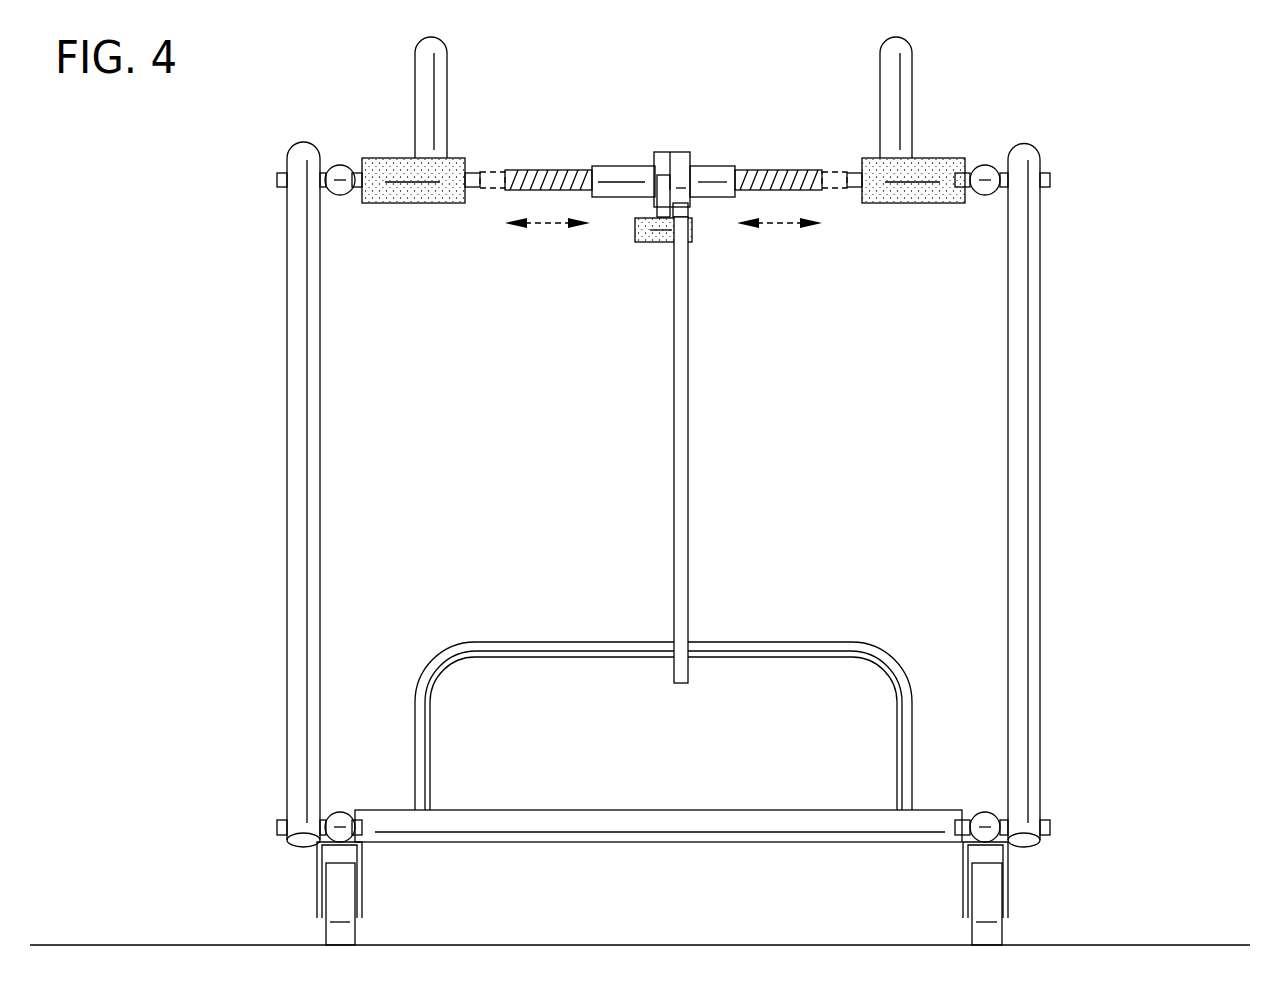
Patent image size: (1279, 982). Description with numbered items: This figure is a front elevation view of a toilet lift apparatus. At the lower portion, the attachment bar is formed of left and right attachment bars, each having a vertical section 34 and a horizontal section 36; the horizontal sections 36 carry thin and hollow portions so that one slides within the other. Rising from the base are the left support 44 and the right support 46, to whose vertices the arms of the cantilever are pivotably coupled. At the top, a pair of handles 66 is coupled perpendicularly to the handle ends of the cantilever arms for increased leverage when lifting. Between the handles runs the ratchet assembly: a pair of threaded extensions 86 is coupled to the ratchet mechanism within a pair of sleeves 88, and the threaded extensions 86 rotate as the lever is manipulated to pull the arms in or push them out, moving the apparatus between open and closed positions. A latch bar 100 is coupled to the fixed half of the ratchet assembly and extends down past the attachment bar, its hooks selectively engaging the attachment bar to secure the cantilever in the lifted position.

The vertical section 34 is at (925, 640).
The horizontal section 36 is at (898, 613).
The left support 44 is at (1020, 480).
The right support 46 is at (295, 432).
The pair of handles 66 is at (888, 87).
The pair of threaded extensions 86 is at (777, 190).
The pair of sleeves 88 is at (617, 178).
The latch bar 100 is at (688, 437).